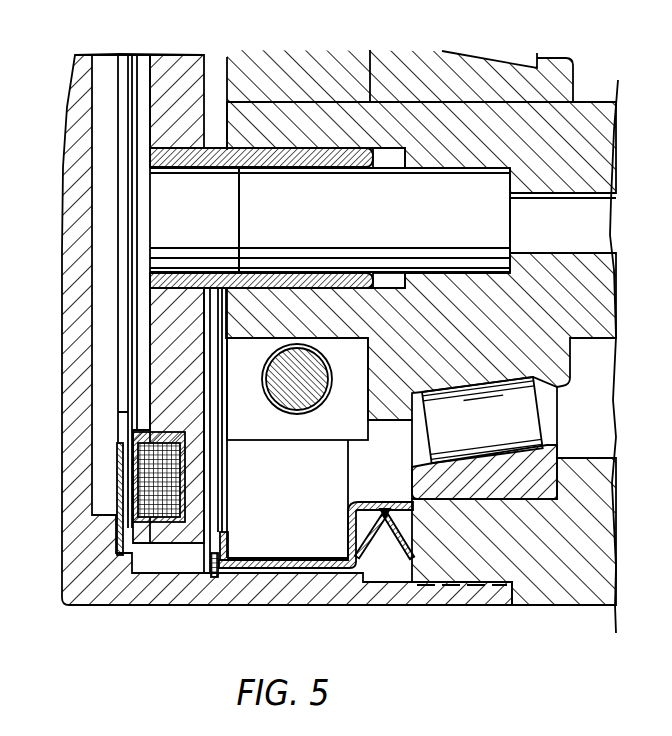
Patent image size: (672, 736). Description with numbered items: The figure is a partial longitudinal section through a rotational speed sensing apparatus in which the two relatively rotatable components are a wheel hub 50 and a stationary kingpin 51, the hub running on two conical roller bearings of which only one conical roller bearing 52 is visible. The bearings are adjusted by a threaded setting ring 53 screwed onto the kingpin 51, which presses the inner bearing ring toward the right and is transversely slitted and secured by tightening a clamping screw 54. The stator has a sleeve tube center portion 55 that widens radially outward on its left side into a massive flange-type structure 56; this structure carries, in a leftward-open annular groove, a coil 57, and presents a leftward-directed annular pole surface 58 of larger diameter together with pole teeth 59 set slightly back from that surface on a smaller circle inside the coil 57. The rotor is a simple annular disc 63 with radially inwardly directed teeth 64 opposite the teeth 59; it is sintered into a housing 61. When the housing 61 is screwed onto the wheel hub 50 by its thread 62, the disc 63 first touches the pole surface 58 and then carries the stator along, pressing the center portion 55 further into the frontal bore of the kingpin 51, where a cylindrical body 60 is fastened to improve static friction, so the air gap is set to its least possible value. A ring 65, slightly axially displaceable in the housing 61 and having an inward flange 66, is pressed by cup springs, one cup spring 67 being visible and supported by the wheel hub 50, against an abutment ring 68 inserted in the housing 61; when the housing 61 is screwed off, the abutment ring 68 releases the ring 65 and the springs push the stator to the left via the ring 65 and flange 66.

The wheel hub 50 is at (573, 563).
The kingpin 51 is at (585, 125).
The conical roller bearing 52 is at (560, 423).
The threaded setting ring 53 is at (331, 418).
The clamping screw 54 is at (280, 400).
The sleeve tube center portion 55 is at (253, 155).
The flange-type structure 56 is at (190, 533).
The coil 57 is at (133, 488).
The annular pole surface 58 is at (118, 531).
The pole teeth 59 is at (142, 423).
The cylindrical body 60 is at (370, 225).
The housing 61 is at (282, 587).
The thread 62 is at (458, 580).
The annular disc 63 is at (133, 462).
The teeth 64 is at (122, 414).
The ring 65 is at (350, 565).
The flange 66 is at (228, 543).
The cup spring 67 is at (373, 537).
The abutment ring 68 is at (215, 575).